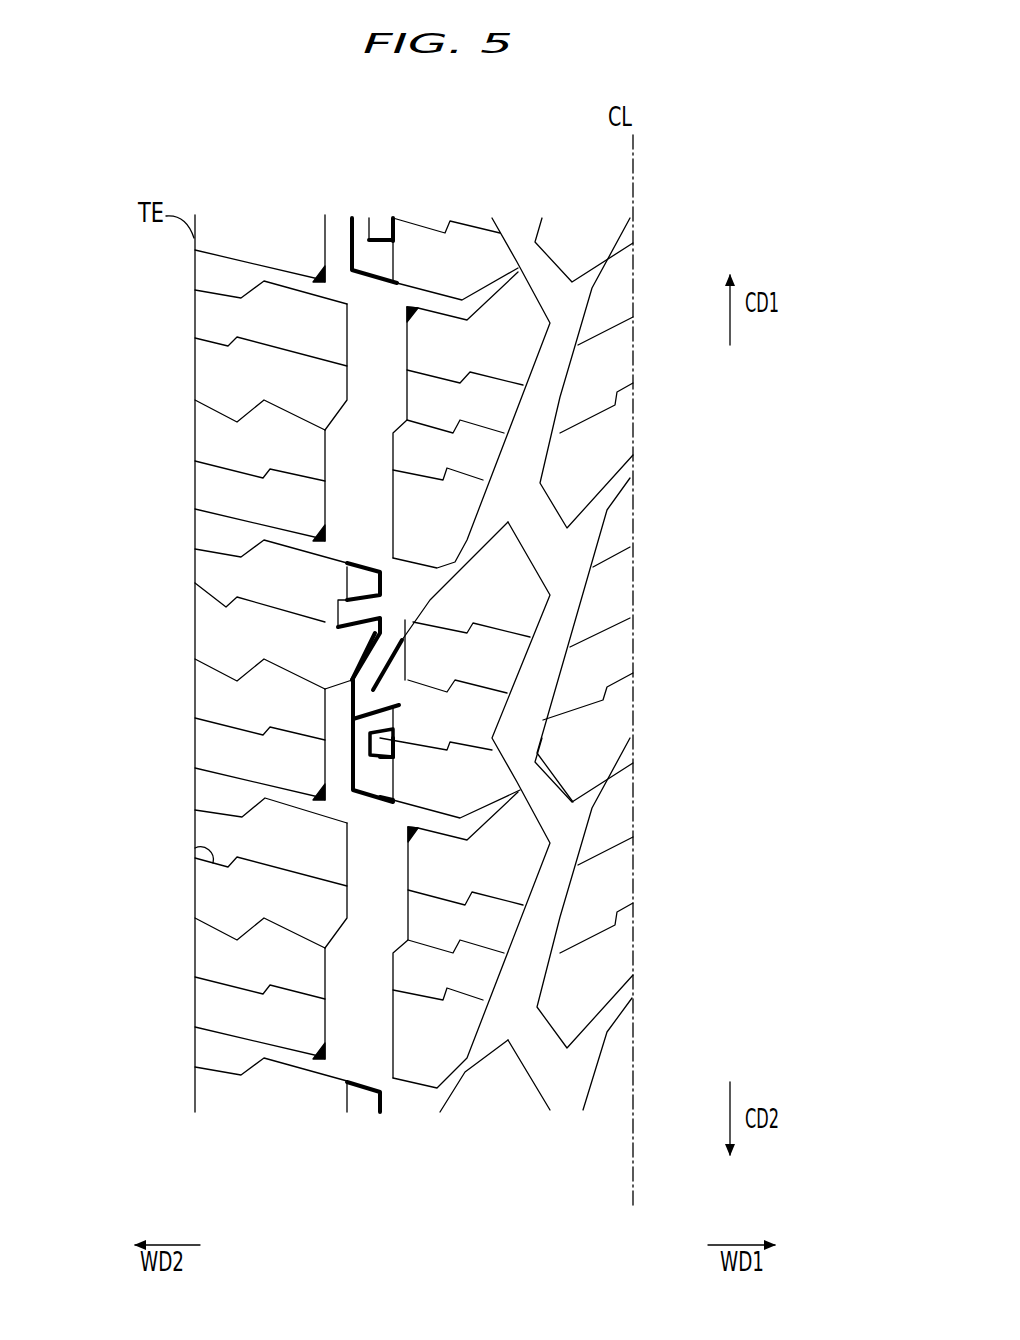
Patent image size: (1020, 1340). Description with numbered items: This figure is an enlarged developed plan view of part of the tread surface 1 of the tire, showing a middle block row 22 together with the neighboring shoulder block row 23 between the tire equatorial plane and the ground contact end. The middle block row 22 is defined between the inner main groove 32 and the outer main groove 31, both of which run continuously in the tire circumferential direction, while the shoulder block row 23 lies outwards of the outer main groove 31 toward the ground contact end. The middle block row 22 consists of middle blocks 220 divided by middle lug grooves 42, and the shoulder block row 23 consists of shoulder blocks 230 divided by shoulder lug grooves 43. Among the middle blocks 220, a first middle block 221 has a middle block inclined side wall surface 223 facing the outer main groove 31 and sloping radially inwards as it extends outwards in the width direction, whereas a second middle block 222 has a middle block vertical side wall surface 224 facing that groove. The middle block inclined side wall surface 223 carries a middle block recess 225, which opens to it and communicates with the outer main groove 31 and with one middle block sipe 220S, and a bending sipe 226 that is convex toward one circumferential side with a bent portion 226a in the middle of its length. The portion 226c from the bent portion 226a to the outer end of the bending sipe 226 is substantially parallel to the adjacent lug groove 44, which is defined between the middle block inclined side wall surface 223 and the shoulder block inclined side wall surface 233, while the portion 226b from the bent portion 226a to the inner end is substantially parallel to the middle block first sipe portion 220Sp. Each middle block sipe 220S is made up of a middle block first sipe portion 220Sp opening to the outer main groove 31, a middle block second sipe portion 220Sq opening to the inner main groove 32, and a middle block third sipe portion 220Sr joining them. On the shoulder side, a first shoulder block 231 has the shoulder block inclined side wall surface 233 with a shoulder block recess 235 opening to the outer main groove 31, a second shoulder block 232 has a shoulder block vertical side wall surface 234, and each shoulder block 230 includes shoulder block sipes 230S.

The tread surface 1 is at (185, 152).
The shoulder block row 23 is at (248, 184).
The middle block row 22 is at (432, 188).
The outer main groove 31 is at (338, 212).
The inner main groove 32 is at (512, 212).
The middle lug groove 42 is at (460, 557).
The shoulder lug groove 43 is at (215, 268).
The adjacent lug groove 44 is at (370, 660).
The middle block 220 is at (413, 696).
The first middle block 221 is at (482, 260).
The second middle block 222 is at (490, 402).
The middle block inclined side wall surface 223 is at (353, 760).
The middle block vertical side wall surface 224 is at (380, 530).
The middle block recess 225 is at (380, 745).
The bending sipe 226 is at (405, 633).
The bent portion 226a is at (394, 664).
The portion of bending sipe 226b is at (400, 652).
The portion of bending sipe 226c is at (372, 670).
The shoulder block 230 is at (236, 663).
The first shoulder block 231 is at (236, 629).
The second shoulder block 232 is at (250, 446).
The shoulder block inclined side wall surface 233 is at (364, 580).
The shoulder block vertical side wall surface 234 is at (340, 338).
The shoulder block recess 235 is at (355, 613).
The shoulder block sipe 230S is at (215, 852).
The middle block sipe 220S is at (420, 1003).
The middle block first sipe portion 220Sp is at (413, 992).
The middle block second sipe portion 220Sq is at (418, 992).
The middle block third sipe portion 220Sr is at (445, 1042).